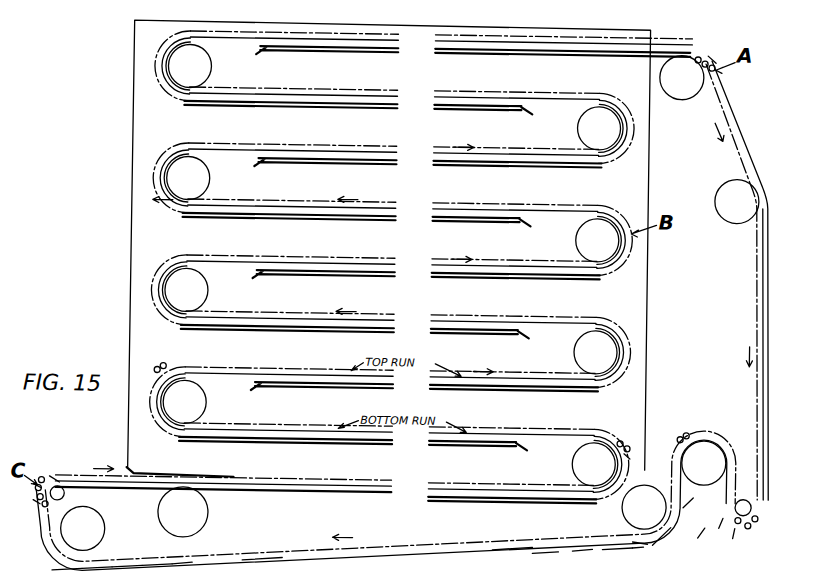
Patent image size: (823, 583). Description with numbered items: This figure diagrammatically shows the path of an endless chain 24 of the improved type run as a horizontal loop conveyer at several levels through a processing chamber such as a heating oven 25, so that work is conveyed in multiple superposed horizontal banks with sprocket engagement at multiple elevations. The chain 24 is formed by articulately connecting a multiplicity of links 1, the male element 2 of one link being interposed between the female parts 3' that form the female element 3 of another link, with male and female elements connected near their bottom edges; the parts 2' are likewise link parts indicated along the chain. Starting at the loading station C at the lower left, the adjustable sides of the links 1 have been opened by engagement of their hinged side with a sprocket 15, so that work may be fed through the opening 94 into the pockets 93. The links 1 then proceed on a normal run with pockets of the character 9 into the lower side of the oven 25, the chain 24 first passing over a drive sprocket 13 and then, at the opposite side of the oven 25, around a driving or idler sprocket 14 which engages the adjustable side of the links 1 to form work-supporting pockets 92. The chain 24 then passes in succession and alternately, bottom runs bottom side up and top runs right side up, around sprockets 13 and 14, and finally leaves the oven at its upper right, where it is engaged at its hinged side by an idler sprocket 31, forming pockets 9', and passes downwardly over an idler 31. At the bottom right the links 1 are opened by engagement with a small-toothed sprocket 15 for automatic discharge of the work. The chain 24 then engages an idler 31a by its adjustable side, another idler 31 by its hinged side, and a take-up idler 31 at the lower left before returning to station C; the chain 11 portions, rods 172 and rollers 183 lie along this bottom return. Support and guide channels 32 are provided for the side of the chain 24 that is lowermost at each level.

The link 1 is at (699, 49).
The male element 2 is at (378, 561).
The link plate 2' is at (402, 551).
The female element 3 is at (387, 563).
The link roller 3' is at (394, 545).
The pocket 9 is at (72, 467).
The pocket 9' is at (720, 42).
The work-supporting pocket 92 is at (628, 452).
The pocket 93 is at (42, 504).
The opening 94 is at (44, 489).
The chain 11 is at (60, 572).
The drive sprocket 13 is at (212, 66).
The driving or idler sprocket 14 is at (578, 122).
The sprocket 15 is at (72, 497).
The cross rod 172 is at (712, 560).
The roller 183 is at (692, 505).
The chain 24 is at (450, 90).
The heating oven 25 is at (134, 242).
The idler sprocket 31 is at (676, 92).
The idler 31a is at (696, 477).
The support and guide channels 32 is at (372, 51).